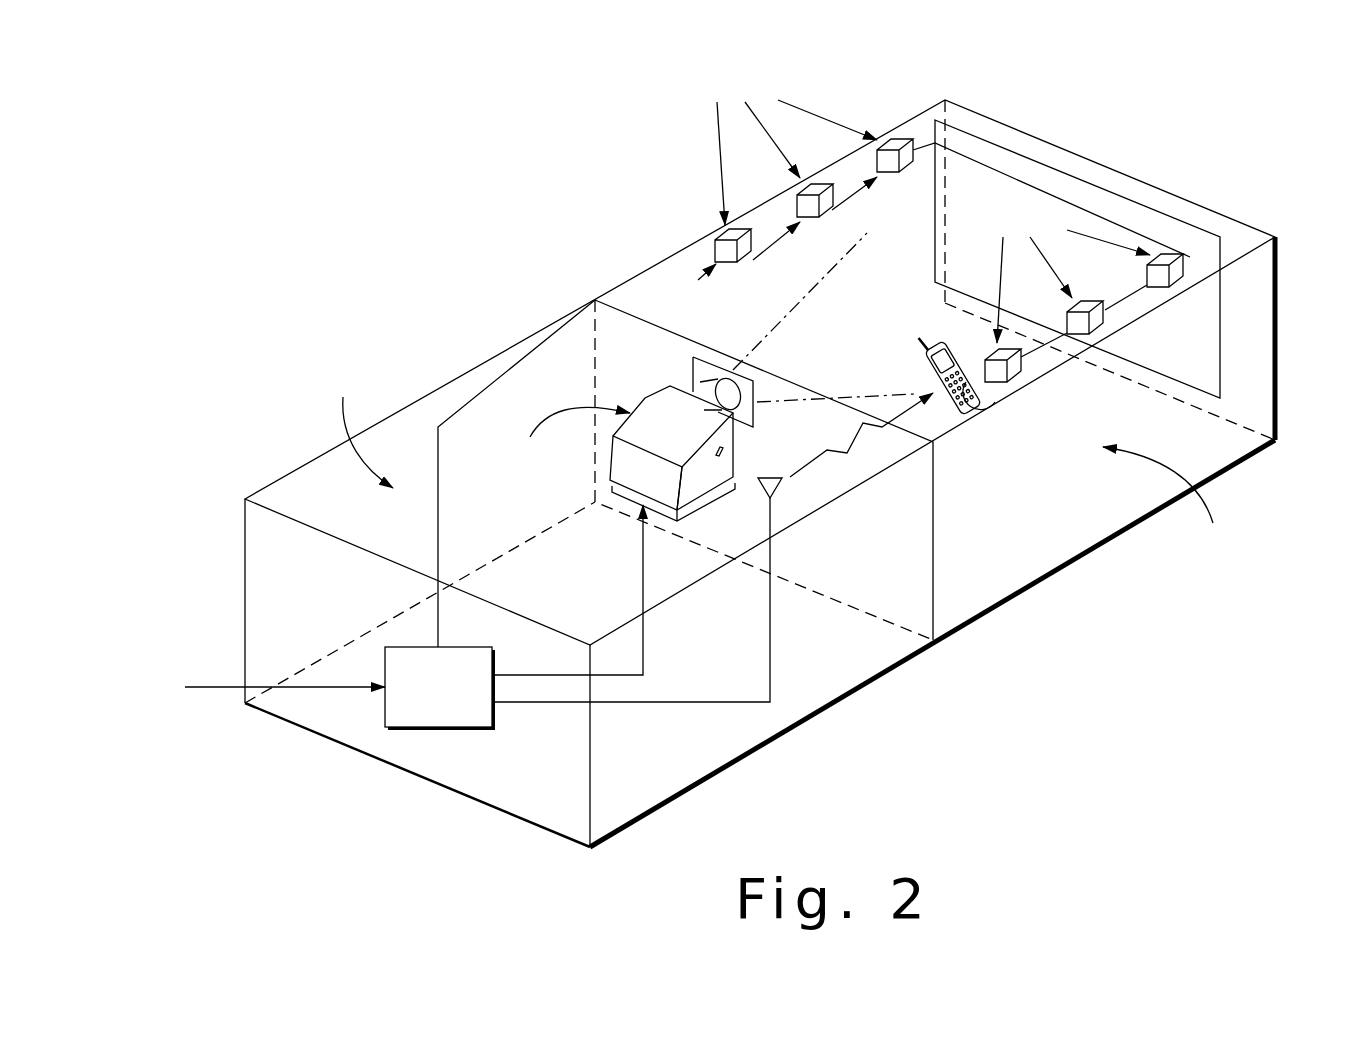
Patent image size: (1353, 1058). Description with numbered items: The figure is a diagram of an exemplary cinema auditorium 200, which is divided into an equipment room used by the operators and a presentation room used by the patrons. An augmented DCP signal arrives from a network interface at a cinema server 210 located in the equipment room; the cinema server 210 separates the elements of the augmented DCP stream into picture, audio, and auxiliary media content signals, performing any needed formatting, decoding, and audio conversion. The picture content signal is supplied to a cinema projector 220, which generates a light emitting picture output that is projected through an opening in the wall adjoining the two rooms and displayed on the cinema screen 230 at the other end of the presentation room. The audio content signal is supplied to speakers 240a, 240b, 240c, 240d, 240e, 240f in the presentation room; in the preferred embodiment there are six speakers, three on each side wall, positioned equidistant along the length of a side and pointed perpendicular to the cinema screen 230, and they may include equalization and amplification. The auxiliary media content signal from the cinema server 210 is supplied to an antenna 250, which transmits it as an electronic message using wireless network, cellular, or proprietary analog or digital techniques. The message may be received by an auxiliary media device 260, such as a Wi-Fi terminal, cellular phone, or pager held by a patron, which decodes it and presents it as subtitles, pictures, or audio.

The auditorium 200 is at (433, 200).
The cinema server 210 is at (470, 732).
The cinema projector 220 is at (652, 390).
The cinema screen 230 is at (1138, 198).
The speaker 240a is at (734, 264).
The speaker 240b is at (818, 219).
The speaker 240c is at (896, 174).
The speaker 240d is at (1178, 290).
The speaker 240e is at (1100, 338).
The speaker 240f is at (1016, 385).
The antenna 250 is at (783, 488).
The auxiliary media device 260 is at (972, 388).